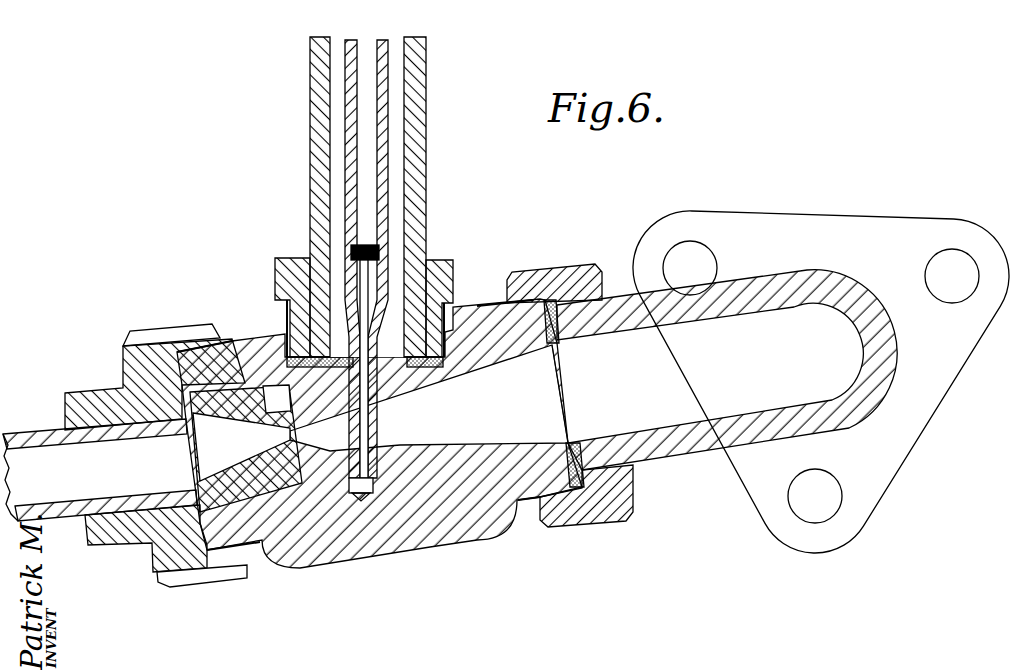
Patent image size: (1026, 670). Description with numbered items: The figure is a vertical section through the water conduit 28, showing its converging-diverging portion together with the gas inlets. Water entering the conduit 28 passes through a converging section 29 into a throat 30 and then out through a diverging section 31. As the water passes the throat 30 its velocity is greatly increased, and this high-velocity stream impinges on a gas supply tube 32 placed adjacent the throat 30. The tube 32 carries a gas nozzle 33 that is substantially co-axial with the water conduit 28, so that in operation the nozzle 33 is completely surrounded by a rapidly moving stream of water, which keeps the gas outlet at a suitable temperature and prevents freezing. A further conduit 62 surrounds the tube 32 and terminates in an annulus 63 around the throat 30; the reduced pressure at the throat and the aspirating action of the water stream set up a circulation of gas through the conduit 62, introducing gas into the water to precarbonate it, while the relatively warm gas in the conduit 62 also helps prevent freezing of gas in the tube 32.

The water conduit 28 is at (692, 395).
The converging section 29 is at (246, 449).
The throat 30 is at (287, 433).
The diverging section 31 is at (429, 398).
The gas supply tube 32 is at (366, 48).
The gas nozzle 33 is at (377, 423).
The conduit 62 is at (427, 126).
The annulus 63 is at (277, 393).